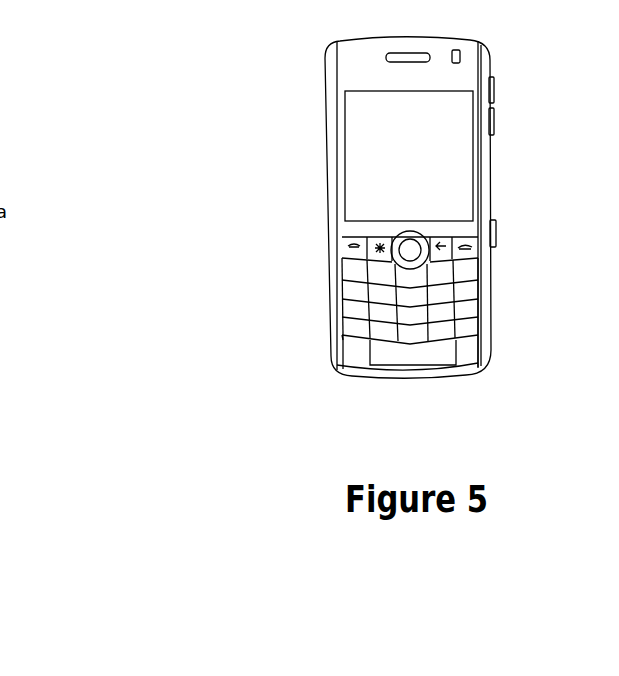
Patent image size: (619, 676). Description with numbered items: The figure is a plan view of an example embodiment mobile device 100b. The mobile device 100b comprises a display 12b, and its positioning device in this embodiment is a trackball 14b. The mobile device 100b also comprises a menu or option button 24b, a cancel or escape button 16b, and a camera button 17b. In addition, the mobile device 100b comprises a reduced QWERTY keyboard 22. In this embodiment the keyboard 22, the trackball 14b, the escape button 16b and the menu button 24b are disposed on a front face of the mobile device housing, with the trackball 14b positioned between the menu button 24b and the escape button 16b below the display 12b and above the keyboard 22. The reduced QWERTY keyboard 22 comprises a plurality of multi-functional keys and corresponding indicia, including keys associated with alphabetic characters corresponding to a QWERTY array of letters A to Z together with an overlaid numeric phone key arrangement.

The mobile device 100b is at (217, 110).
The display 12b is at (418, 150).
The trackball 14b is at (421, 232).
The camera button 17b is at (499, 243).
The menu or option button 24b is at (385, 246).
The cancel or escape button 16b is at (444, 253).
The reduced QWERTY keyboard 22 is at (360, 336).